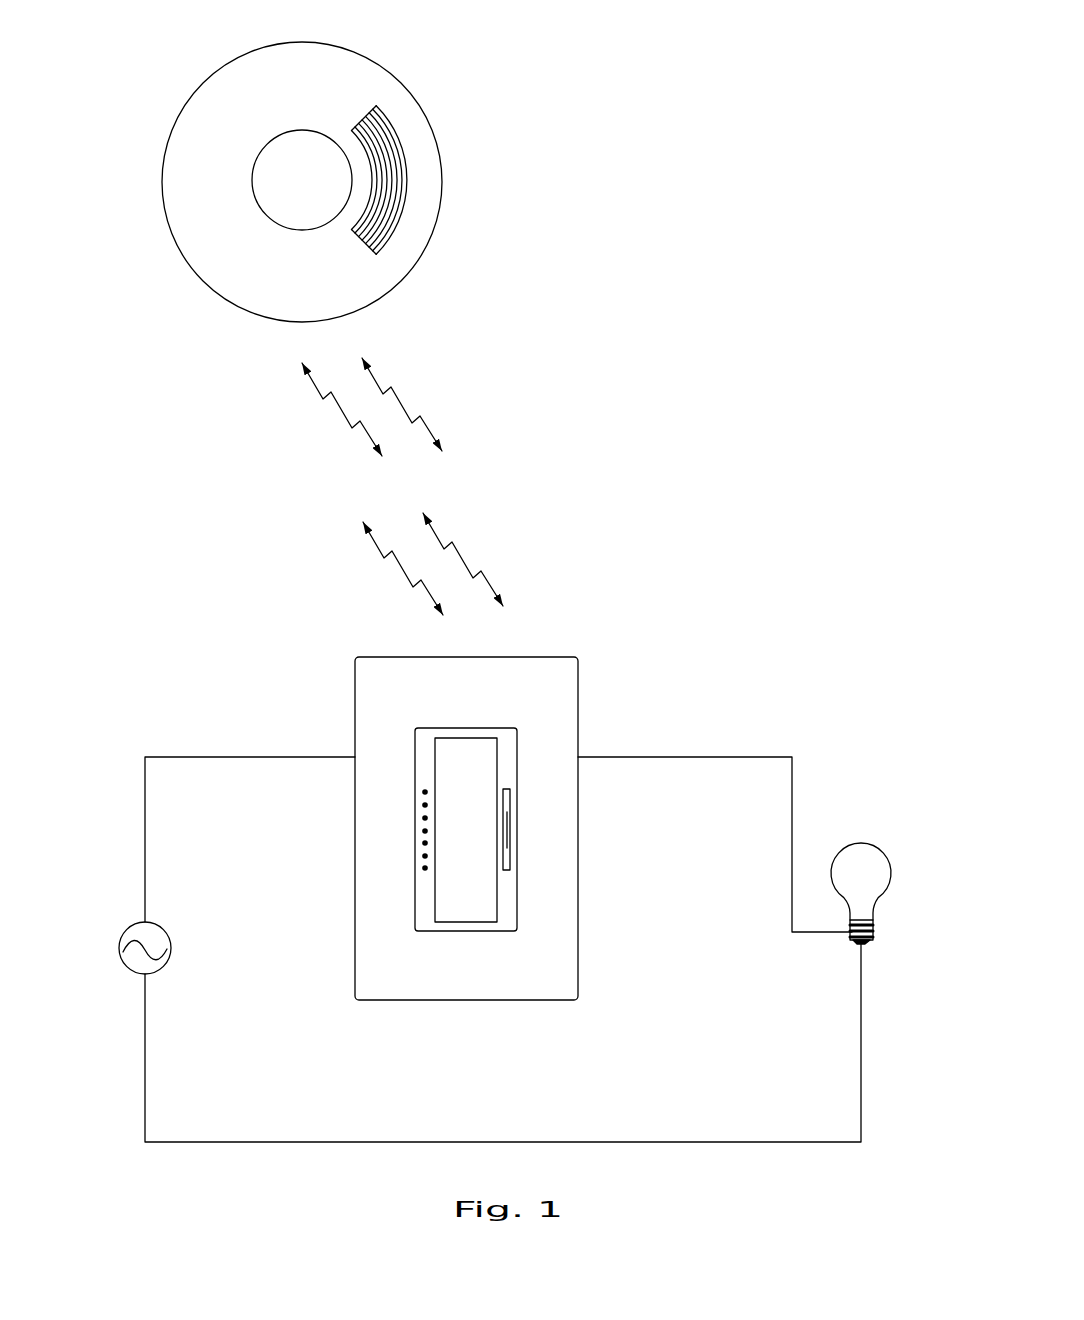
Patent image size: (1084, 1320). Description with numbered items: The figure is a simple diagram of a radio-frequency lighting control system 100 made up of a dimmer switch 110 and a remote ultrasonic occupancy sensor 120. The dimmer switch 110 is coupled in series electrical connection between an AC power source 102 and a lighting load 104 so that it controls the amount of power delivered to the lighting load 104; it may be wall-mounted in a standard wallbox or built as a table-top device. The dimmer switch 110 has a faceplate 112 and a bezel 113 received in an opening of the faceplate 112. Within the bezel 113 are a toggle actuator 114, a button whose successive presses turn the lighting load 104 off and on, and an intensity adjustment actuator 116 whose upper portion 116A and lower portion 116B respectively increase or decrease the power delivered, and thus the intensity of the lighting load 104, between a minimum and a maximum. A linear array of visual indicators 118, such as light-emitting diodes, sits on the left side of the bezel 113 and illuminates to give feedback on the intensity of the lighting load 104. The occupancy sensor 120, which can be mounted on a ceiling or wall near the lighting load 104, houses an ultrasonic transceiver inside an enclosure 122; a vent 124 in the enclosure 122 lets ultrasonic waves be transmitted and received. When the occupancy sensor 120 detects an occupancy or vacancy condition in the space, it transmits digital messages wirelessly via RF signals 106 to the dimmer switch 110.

The radio-frequency lighting control system 100 is at (760, 529).
The AC power source 102 is at (127, 972).
The lighting load 104 is at (861, 862).
The RF signals 106 is at (446, 426).
The dimmer switch 110 is at (475, 850).
The faceplate 112 is at (546, 708).
The bezel 113 is at (427, 907).
The toggle actuator 114 is at (477, 910).
The intensity adjustment actuator 116 is at (529, 829).
The upper portion 116A is at (505, 809).
The lower portion 116B is at (505, 848).
The visual indicators 118 is at (415, 831).
The occupancy sensor 120 is at (178, 305).
The enclosure 122 is at (302, 93).
The vent 124 is at (398, 198).